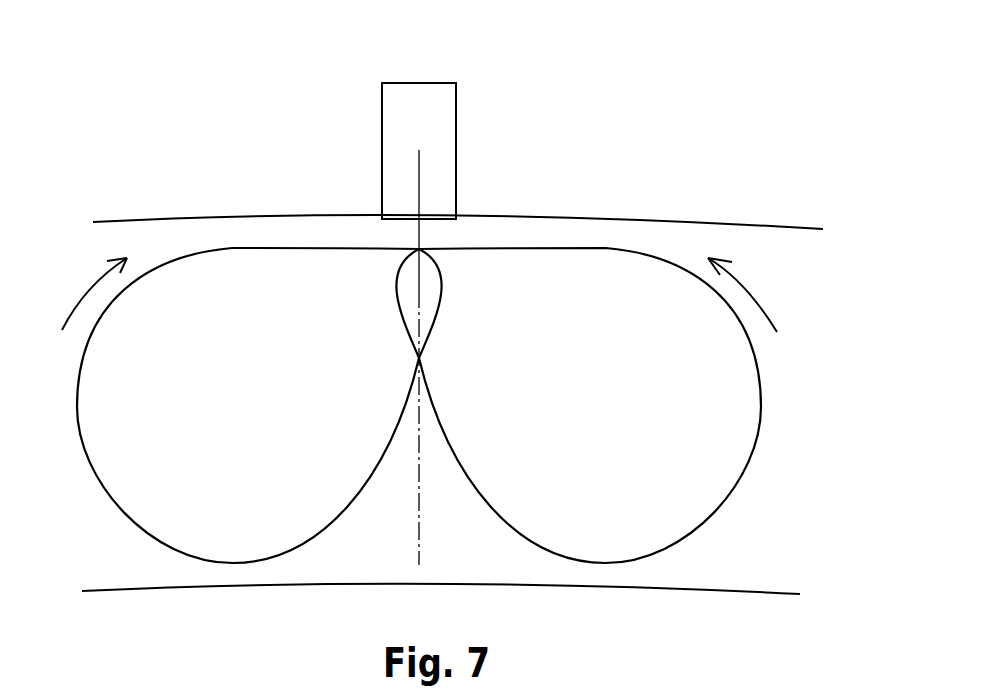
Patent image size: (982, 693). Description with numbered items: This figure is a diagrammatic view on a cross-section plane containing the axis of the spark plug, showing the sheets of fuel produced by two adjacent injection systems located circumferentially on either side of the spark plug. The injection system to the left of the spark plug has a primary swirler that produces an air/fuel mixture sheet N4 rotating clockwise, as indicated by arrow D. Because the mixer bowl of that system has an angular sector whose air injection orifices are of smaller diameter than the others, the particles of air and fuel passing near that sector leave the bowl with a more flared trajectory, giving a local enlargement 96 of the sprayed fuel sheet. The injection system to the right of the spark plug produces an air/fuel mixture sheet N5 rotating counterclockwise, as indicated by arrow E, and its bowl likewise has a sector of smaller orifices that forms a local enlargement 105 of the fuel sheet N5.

The air/fuel mixture sheet N4 is at (228, 238).
The air/fuel mixture sheet N5 is at (617, 248).
The local enlargement 96 is at (342, 247).
The local enlargement 105 is at (487, 247).
The arrow D is at (82, 293).
The arrow E is at (753, 296).